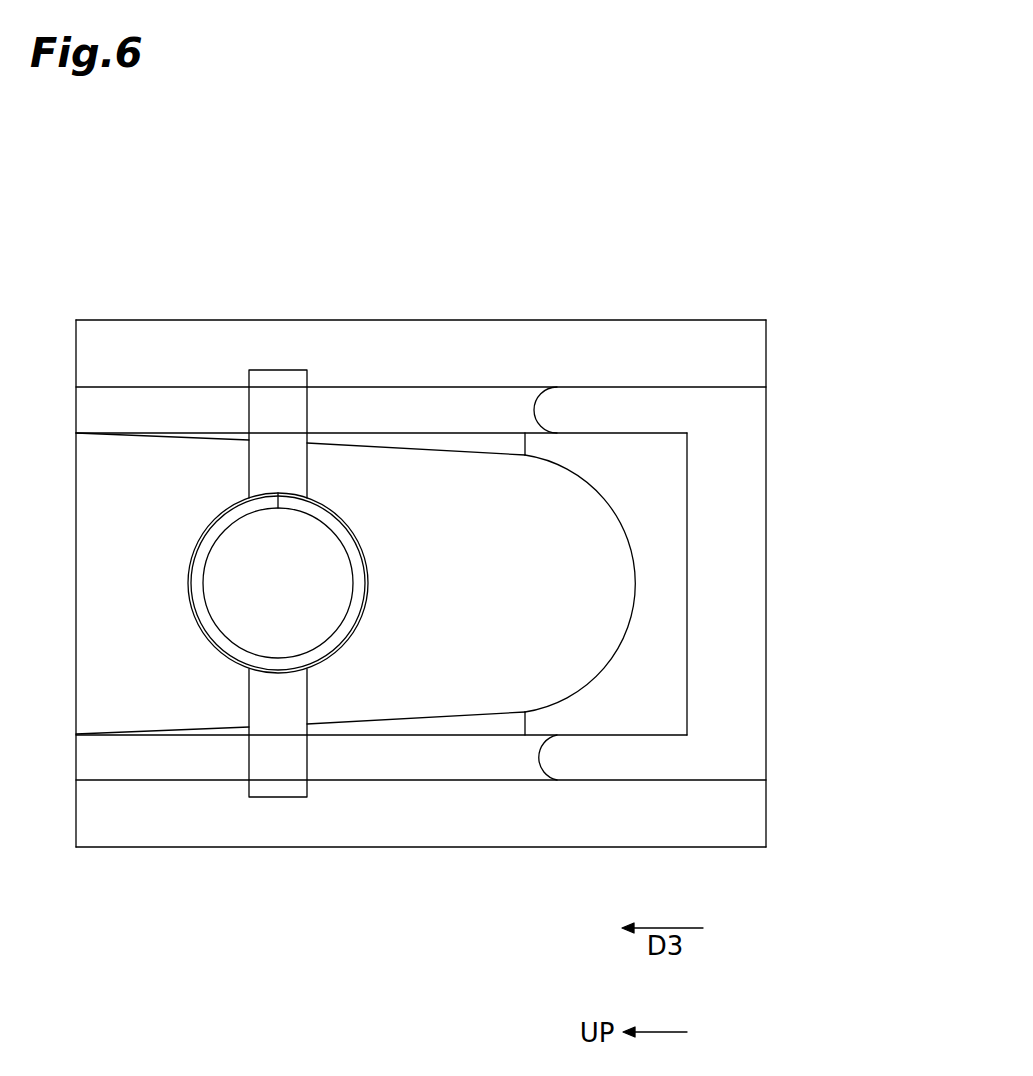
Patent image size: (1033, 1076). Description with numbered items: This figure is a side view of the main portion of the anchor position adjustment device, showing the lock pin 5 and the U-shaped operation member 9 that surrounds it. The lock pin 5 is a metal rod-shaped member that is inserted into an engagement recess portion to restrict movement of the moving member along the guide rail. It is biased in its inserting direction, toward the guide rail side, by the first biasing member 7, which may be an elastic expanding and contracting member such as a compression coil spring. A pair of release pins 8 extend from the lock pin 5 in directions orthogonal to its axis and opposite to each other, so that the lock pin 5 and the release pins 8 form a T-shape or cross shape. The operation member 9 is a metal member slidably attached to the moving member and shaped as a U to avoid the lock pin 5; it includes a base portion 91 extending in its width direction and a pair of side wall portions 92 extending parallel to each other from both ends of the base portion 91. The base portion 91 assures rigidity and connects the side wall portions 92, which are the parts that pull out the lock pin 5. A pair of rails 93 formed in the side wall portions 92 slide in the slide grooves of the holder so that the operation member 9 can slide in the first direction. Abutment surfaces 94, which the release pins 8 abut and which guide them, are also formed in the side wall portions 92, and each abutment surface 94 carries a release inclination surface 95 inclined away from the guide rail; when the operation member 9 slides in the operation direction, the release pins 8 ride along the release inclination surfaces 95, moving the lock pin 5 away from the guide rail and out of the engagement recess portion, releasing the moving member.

The lock pin 5 is at (243, 600).
The first biasing member 7 is at (198, 568).
The release pin 8 is at (277, 370).
The operation member 9 is at (647, 319).
The base portion 91 is at (766, 582).
The side wall portion 92 is at (474, 387).
The rail 93 is at (548, 352).
The abutment surface 94 is at (367, 410).
The release inclination surface 95 is at (381, 586).